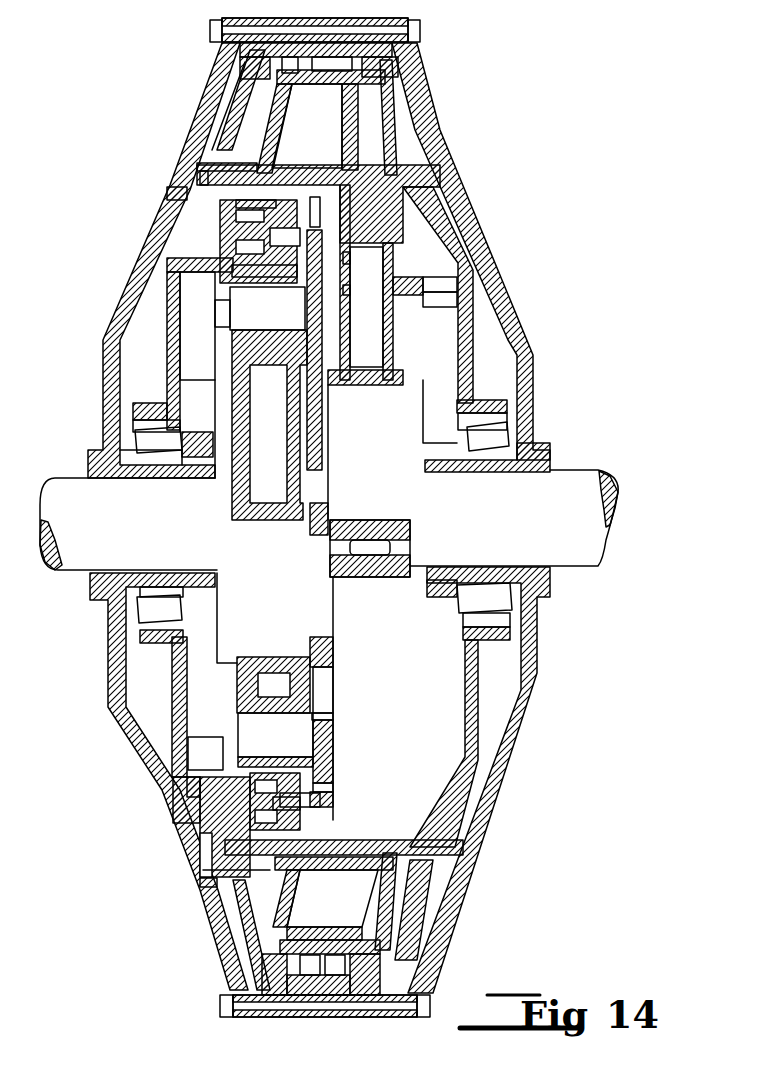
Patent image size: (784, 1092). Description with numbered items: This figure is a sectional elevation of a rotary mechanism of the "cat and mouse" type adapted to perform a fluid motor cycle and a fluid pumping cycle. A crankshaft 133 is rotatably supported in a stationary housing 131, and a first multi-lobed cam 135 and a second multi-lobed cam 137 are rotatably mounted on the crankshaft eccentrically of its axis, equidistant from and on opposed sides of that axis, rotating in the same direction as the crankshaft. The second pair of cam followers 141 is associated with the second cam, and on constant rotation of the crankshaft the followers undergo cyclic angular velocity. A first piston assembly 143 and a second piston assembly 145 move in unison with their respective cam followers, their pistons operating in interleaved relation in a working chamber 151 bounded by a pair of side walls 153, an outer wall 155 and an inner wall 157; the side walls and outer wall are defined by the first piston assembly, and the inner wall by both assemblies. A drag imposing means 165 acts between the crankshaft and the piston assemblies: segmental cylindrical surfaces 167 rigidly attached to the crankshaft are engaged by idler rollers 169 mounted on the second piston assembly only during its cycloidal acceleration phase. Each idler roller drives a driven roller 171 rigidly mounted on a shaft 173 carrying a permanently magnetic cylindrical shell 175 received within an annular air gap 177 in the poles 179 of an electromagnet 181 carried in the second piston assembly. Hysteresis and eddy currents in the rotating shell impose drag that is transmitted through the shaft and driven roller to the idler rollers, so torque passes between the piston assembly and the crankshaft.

The stationary housing 131 is at (105, 430).
The crankshaft 133 is at (97, 540).
The first multi-lobed cam 135 is at (457, 233).
The second multi-lobed cam 137 is at (250, 343).
The second pair of cam followers 141 is at (250, 305).
The first piston assembly 143 is at (420, 187).
The second piston assembly 145 is at (200, 185).
The working chamber 151 is at (283, 126).
The side walls 153 is at (280, 92).
The outer wall 155 is at (421, 26).
The inner wall 157 is at (345, 163).
The drag imposing means 165 is at (213, 240).
The segmental cylindrical surfaces 167 is at (325, 688).
The idler rollers 169 is at (333, 718).
The driven roller 171 is at (320, 800).
The shaft 173 is at (250, 205).
The cylindrical shell 175 is at (200, 270).
The annular air gap 177 is at (213, 878).
The poles 179 is at (182, 140).
The electromagnet 181 is at (203, 118).